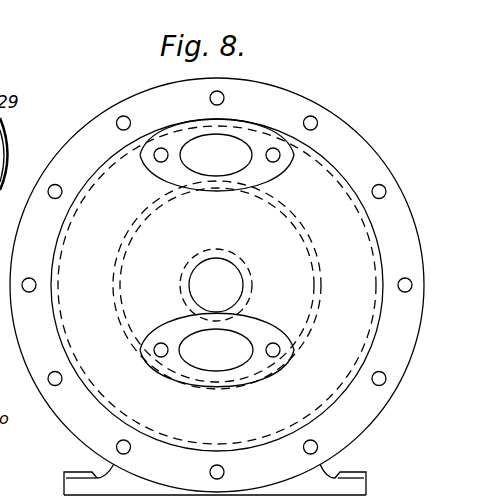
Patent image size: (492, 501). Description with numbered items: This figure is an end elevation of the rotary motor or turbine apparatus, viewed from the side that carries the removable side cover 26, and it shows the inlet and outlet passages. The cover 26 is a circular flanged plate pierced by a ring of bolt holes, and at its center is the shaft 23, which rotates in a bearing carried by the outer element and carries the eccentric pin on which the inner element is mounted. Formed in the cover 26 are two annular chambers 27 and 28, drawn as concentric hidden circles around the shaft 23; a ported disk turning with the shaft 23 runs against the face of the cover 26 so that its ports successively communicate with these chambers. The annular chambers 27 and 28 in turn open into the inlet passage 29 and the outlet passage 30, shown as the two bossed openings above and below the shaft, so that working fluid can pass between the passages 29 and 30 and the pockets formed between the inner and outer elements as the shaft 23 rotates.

The shaft 23 is at (225, 272).
The removable side cover 26 is at (296, 107).
The annular chamber 27 is at (313, 183).
The annular chamber 28 is at (157, 232).
The inlet passage 29 is at (217, 155).
The outlet passage 30 is at (217, 350).